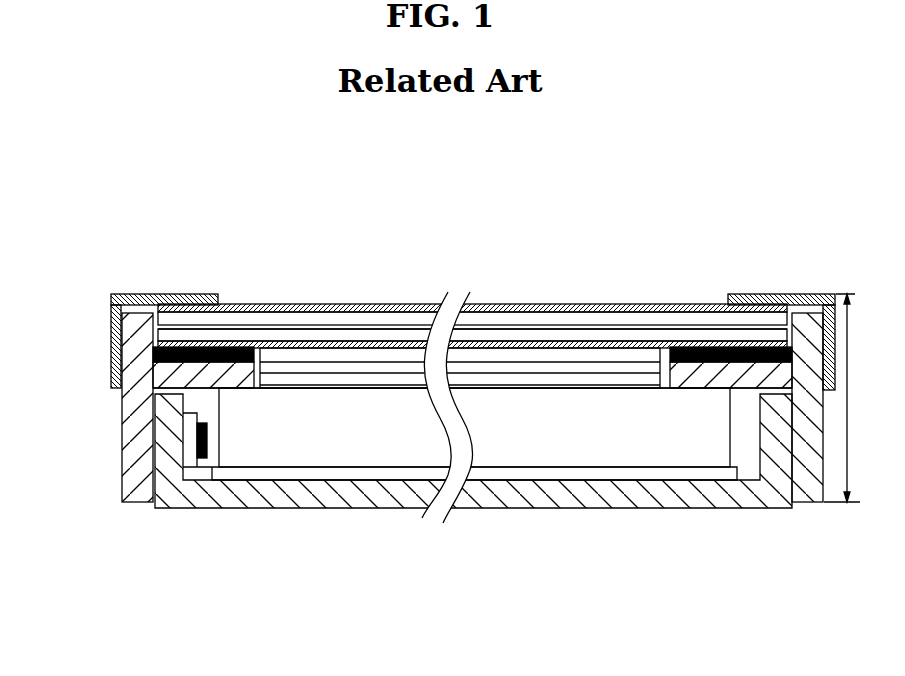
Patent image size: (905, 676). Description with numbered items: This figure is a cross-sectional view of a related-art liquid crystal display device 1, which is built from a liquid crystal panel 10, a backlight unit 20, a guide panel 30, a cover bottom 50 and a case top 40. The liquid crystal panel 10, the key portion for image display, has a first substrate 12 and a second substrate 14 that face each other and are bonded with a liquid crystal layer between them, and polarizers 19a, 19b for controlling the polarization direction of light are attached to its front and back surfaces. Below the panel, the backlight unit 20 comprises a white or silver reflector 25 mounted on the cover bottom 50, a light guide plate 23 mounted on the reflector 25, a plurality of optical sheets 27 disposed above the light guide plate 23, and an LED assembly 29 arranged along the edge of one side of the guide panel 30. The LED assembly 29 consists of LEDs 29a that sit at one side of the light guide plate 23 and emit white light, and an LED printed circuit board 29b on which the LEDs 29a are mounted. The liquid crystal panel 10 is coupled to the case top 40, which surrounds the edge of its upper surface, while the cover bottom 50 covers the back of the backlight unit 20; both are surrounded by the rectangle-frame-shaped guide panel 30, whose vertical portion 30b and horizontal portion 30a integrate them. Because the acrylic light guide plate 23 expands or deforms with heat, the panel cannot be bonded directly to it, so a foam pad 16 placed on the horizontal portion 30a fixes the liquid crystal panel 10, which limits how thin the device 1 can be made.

The liquid crystal display device 1 is at (457, 173).
The liquid crystal panel 10 is at (472, 279).
The first substrate 12 is at (555, 338).
The second substrate 14 is at (588, 318).
The polarizer 19a is at (563, 251).
The polarizer 19b is at (625, 308).
The foam pad 16 is at (112, 363).
The backlight unit 20 is at (468, 503).
The light guide plate 23 is at (363, 452).
The reflector 25 is at (318, 472).
The optical sheets 27 is at (409, 389).
The LED assembly 29 is at (190, 513).
The LEDs 29a is at (202, 459).
The LED printed circuit board 29b is at (192, 480).
The guide panel 30 is at (413, 407).
The horizontal portion 30a is at (121, 397).
The vertical portion 30b is at (121, 432).
The case top 40 is at (155, 293).
The cover bottom 50 is at (162, 513).